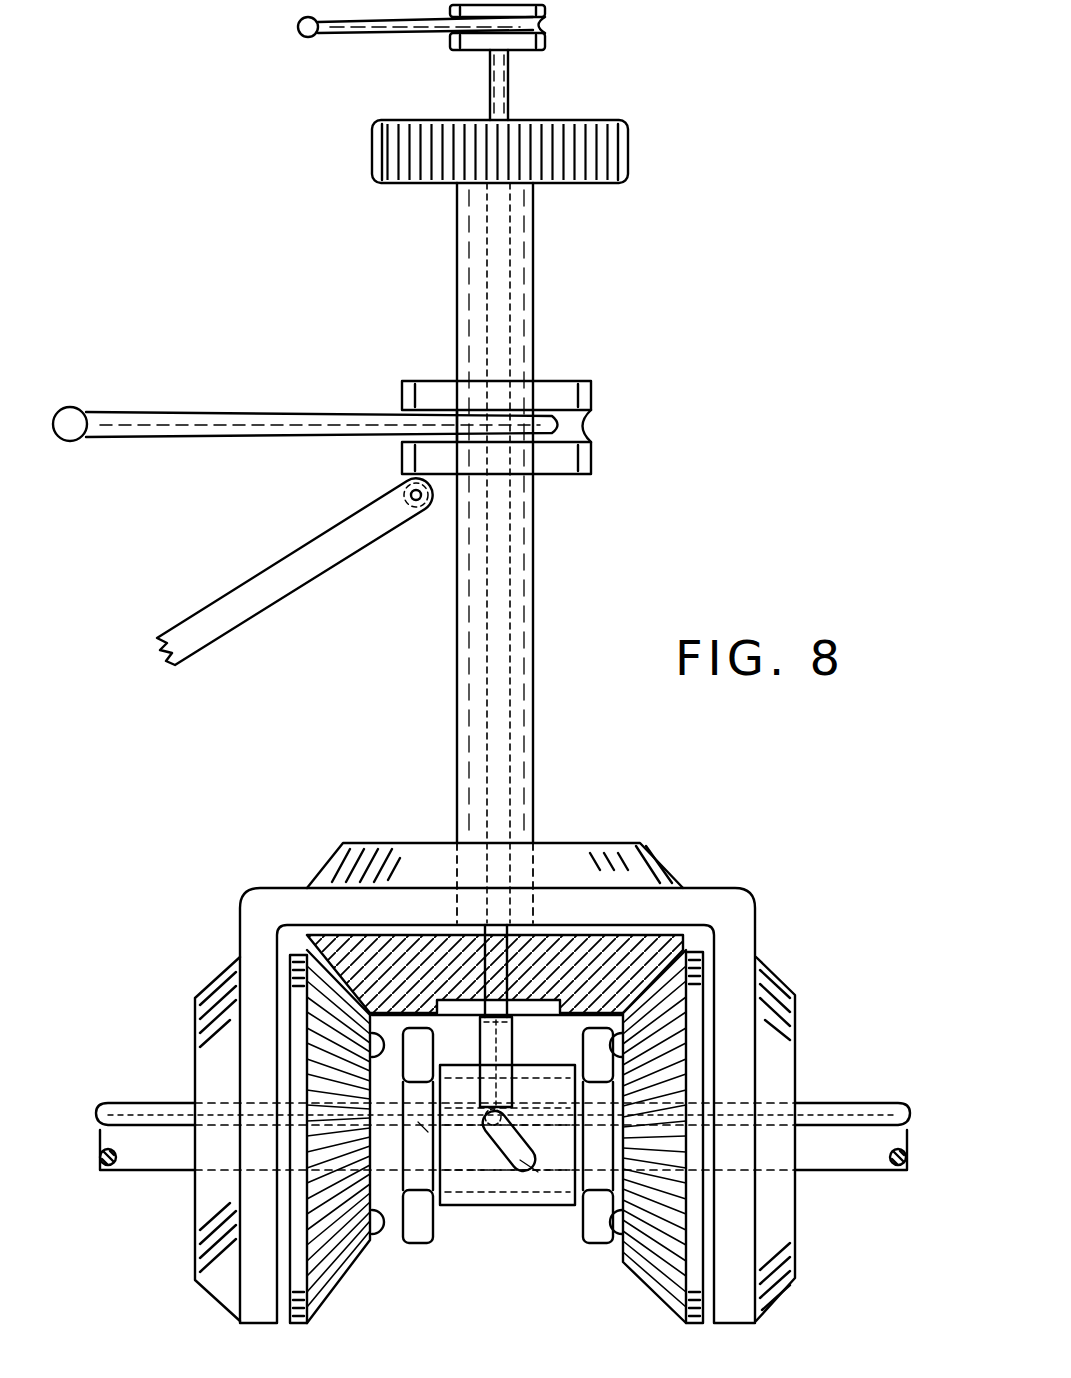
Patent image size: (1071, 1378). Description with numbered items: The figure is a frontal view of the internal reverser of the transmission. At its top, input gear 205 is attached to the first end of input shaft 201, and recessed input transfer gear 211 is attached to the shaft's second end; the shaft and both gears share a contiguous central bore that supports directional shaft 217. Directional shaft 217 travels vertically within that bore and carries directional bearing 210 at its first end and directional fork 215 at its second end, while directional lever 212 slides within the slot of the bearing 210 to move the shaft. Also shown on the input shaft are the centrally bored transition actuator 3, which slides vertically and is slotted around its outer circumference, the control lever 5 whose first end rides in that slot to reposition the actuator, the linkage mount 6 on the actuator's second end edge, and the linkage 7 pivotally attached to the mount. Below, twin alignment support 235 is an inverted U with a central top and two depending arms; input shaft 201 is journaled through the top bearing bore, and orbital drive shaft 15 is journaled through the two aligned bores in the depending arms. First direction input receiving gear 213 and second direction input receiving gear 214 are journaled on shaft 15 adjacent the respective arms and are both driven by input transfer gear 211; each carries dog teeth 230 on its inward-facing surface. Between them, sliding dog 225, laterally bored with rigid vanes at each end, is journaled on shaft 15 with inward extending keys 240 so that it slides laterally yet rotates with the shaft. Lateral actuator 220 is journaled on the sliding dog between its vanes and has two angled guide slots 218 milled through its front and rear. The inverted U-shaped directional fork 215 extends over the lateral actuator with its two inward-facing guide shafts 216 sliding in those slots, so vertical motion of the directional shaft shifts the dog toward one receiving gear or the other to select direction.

The transition actuator 3 is at (591, 396).
The control lever 5 is at (230, 412).
The linkage mount 6 is at (453, 476).
The linkage 7 is at (240, 582).
The orbital drive shaft 15 is at (110, 1103).
The input shaft 201 is at (533, 258).
The input gear 205 is at (628, 152).
The directional bearing 210 is at (545, 45).
The input transfer gear 211 is at (693, 937).
The directional lever 212 is at (298, 27).
The first direction input receiving gear 213 is at (660, 1297).
The second direction input receiving gear 214 is at (332, 1302).
The directional fork 215 is at (514, 1020).
The guide shafts 216 is at (500, 1112).
The directional shaft 217 is at (490, 92).
The guide slots 218 is at (540, 1160).
The lateral actuator 220 is at (503, 1208).
The sliding dog 225 is at (438, 1240).
The dog teeth 230 is at (375, 1242).
The twin alignment support 235 is at (240, 888).
The keys 240 is at (417, 1127).